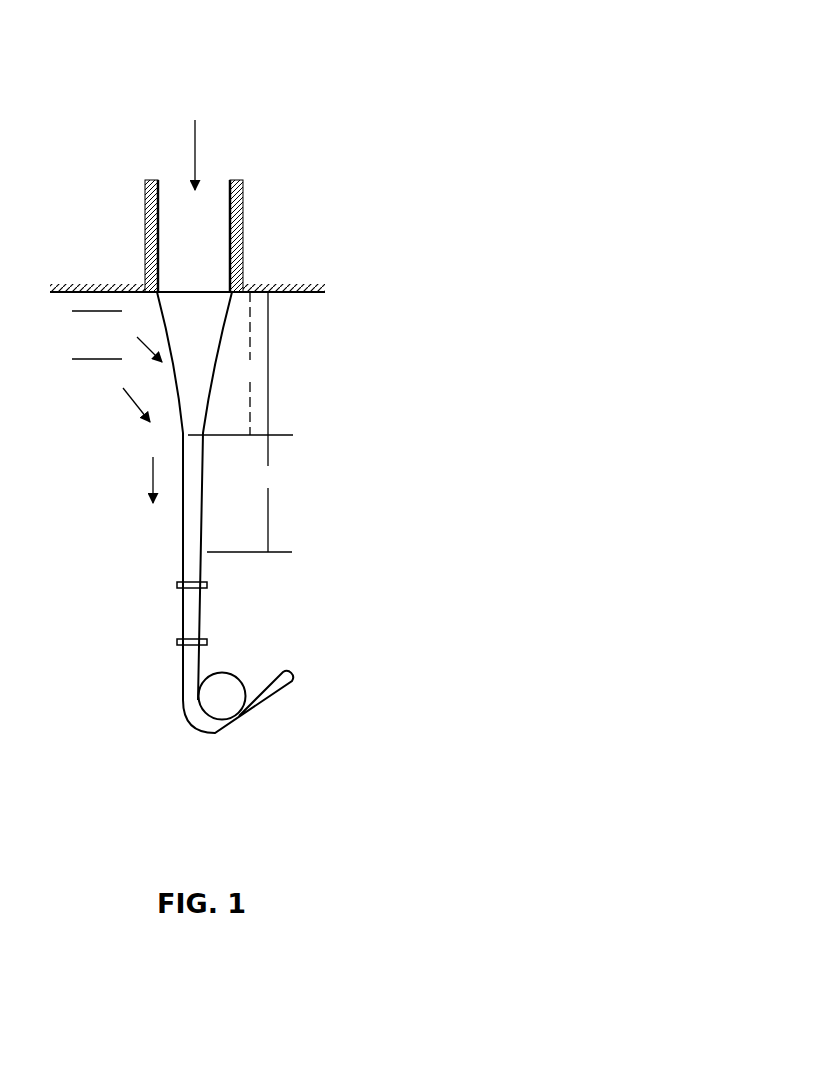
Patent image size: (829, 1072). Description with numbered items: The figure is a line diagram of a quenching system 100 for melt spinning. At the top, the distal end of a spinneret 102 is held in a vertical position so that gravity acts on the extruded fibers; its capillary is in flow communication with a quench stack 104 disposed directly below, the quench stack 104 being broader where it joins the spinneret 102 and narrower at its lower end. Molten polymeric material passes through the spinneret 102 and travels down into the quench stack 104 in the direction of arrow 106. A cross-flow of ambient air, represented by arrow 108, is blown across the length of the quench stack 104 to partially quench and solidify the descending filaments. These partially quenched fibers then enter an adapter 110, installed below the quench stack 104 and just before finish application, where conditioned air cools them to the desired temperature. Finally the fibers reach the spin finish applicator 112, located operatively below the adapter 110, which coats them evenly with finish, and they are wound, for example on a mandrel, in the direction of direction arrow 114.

The quenching system 100 is at (358, 117).
The spinneret 102 is at (248, 232).
The quench stack 104 is at (420, 262).
The arrow 106 is at (197, 139).
The arrow 108 is at (95, 407).
The adapter 110 is at (167, 642).
The spin finish applicator 112 is at (212, 697).
The direction arrow 114 is at (300, 670).